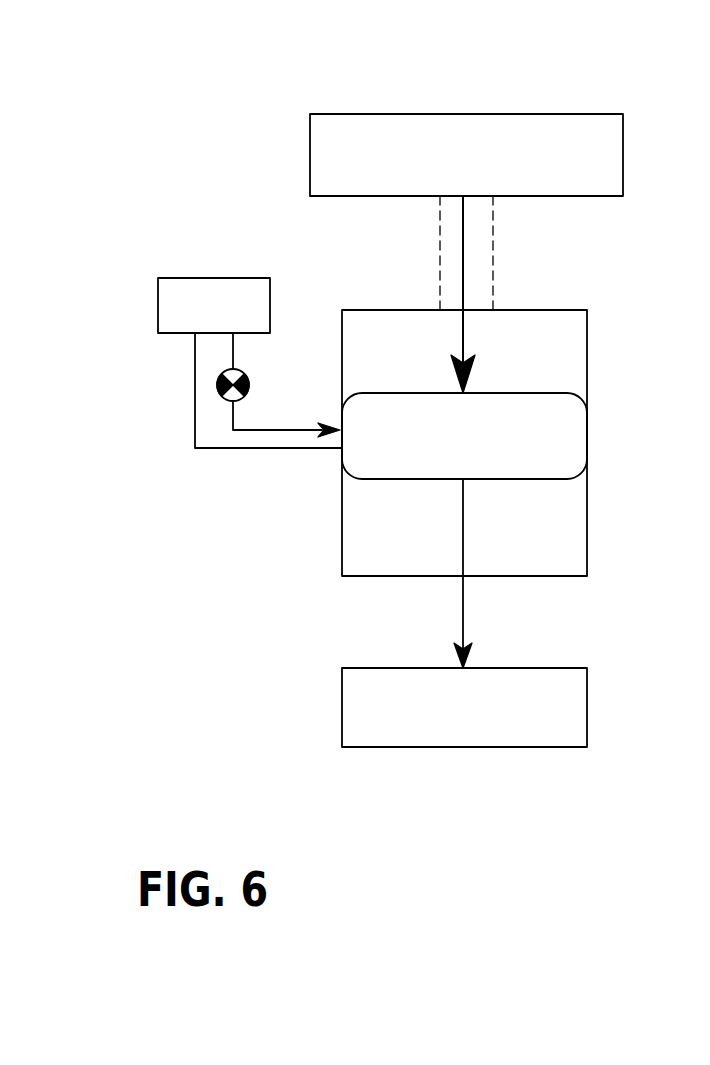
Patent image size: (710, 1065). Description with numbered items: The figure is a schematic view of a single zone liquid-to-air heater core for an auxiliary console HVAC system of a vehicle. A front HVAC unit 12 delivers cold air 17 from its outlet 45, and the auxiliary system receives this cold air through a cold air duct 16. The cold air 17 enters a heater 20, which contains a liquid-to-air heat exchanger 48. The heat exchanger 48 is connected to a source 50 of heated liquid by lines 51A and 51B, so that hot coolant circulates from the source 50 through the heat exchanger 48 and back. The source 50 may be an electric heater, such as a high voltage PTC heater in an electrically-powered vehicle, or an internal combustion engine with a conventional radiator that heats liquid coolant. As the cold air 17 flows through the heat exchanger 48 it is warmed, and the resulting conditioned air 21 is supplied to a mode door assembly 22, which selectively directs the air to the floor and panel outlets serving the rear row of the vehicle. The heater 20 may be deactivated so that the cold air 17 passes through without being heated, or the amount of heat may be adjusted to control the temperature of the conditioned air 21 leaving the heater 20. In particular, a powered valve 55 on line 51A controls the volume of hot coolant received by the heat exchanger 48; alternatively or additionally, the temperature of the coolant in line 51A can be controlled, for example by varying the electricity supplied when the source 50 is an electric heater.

The front HVAC unit 12 is at (445, 114).
The cold air 17 is at (463, 248).
The outlet 45 is at (472, 197).
The cold air duct 16 is at (493, 267).
The heater 20 is at (337, 518).
The liquid-to-air heat exchanger 48 is at (540, 395).
The conditioned air 21 is at (463, 607).
The mode door assembly 22 is at (383, 747).
The source of heated liquid 50 is at (222, 278).
The line 51A is at (282, 430).
The line 51B is at (248, 450).
The powered valve 55 is at (215, 388).